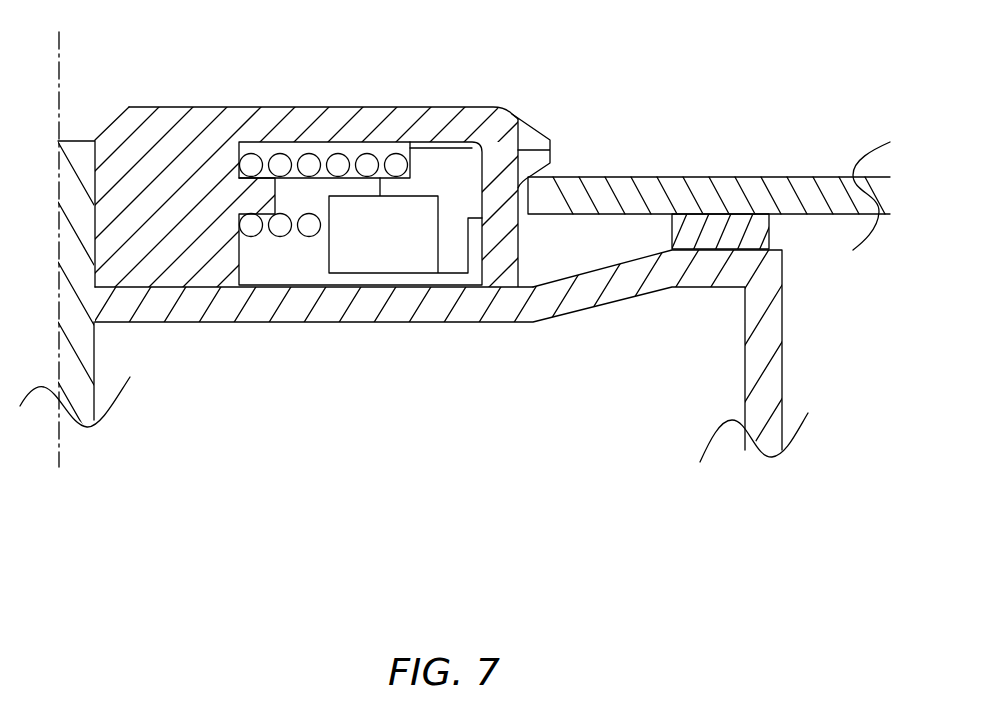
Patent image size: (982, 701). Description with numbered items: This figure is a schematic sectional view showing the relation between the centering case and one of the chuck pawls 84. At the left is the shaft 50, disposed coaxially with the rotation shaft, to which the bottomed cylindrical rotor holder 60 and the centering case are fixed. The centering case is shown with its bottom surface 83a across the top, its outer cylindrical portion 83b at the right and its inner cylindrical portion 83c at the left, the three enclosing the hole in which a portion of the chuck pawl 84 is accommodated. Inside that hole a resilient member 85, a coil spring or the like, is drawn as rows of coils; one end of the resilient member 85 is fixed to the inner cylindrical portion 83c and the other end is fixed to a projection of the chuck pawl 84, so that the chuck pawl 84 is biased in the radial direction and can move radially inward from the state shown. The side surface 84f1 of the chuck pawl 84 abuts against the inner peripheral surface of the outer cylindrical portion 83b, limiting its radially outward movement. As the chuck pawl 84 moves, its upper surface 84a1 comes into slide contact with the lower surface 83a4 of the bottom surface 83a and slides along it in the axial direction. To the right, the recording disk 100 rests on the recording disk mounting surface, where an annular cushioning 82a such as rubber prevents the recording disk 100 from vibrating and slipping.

The shaft 50 is at (83, 392).
The rotor holder 60 is at (755, 413).
The annular cushioning 82a is at (722, 242).
The bottom surface 83a is at (320, 132).
The lower surface of the bottom surface 83a4 is at (447, 150).
The outer cylindrical portion 83b is at (500, 232).
The inner cylindrical portion 83c is at (180, 173).
The chuck pawl 84 is at (530, 117).
The upper surface 84a1 is at (468, 148).
The side surface 84f1 is at (390, 190).
The resilient member 85 is at (310, 227).
The recording disk 100 is at (828, 207).